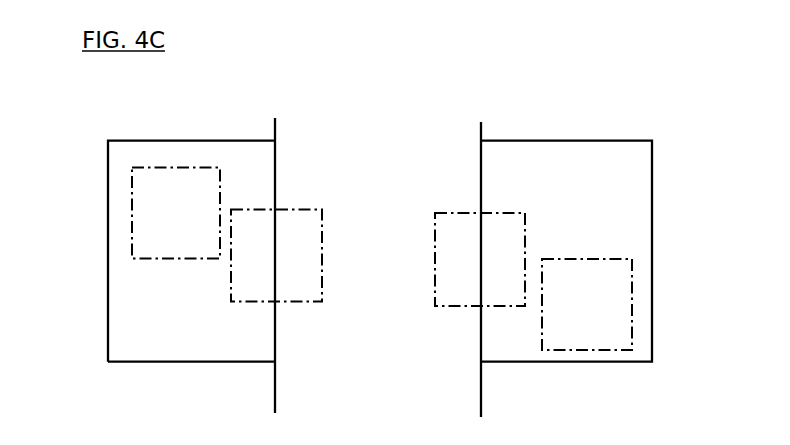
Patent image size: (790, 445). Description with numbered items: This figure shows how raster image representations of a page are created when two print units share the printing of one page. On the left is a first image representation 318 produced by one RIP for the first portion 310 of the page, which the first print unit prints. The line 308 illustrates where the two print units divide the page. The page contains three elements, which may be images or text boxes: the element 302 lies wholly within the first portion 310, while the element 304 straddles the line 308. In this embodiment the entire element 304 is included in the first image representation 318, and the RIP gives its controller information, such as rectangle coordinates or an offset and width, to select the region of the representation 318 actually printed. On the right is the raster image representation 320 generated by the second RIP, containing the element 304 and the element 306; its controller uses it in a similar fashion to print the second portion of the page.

The element 302 is at (197, 262).
The element 304 is at (253, 210).
The element 306 is at (583, 258).
The line 308 is at (275, 135).
The first portion 310 is at (203, 362).
The first image representation 318 is at (108, 185).
The raster image representation 320 is at (602, 141).